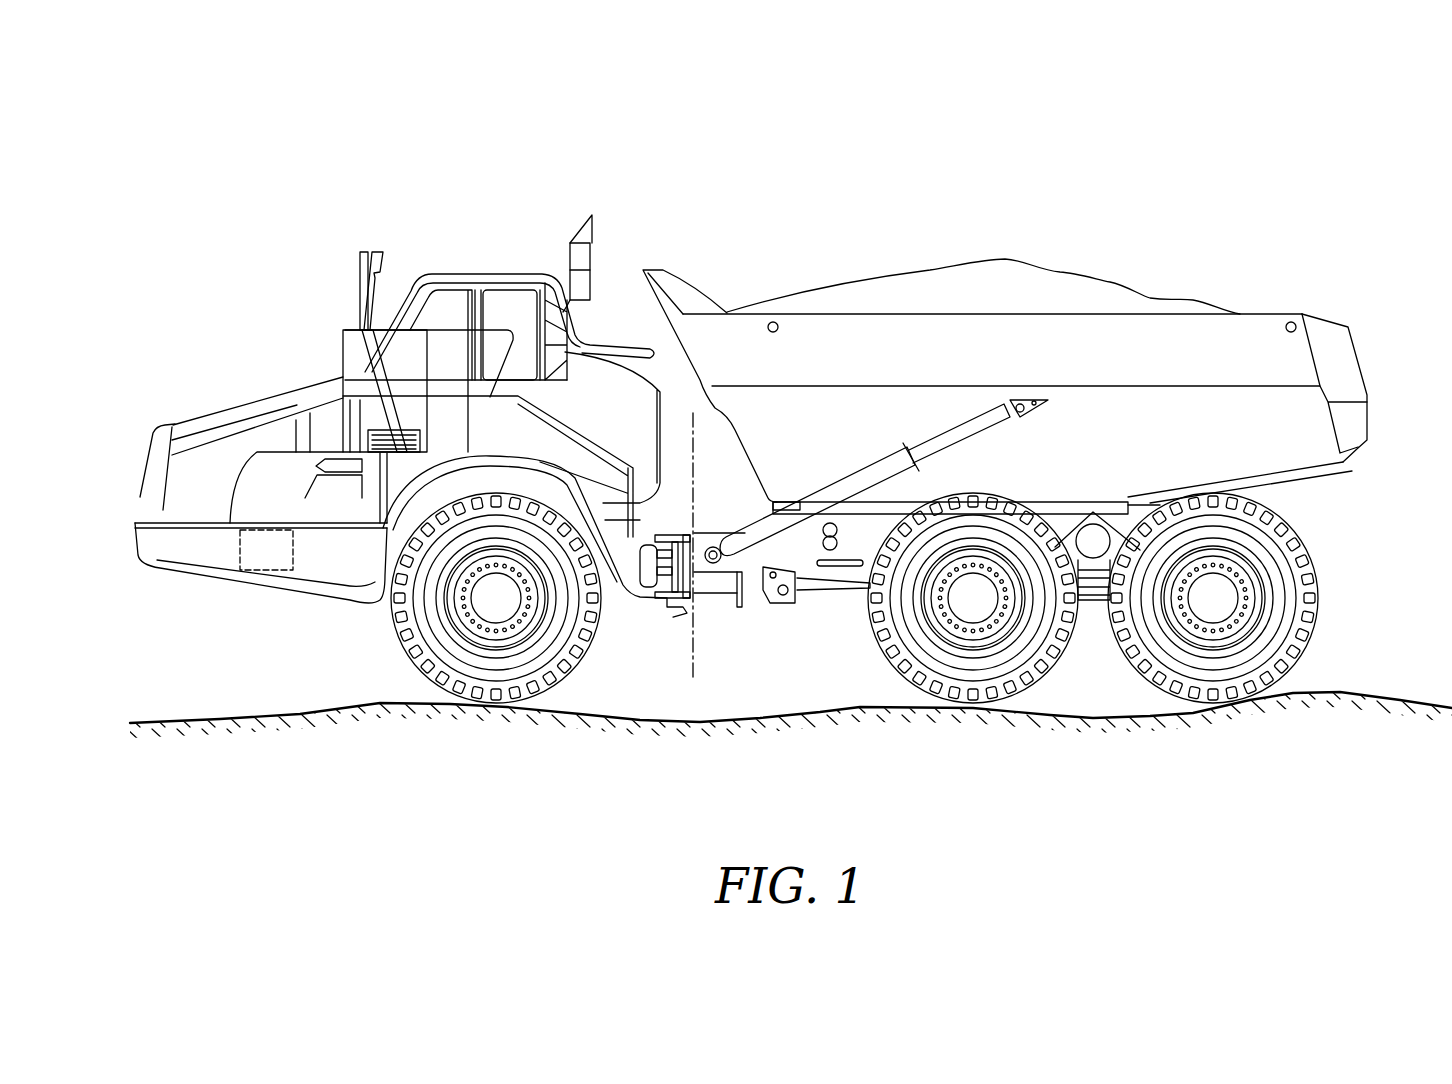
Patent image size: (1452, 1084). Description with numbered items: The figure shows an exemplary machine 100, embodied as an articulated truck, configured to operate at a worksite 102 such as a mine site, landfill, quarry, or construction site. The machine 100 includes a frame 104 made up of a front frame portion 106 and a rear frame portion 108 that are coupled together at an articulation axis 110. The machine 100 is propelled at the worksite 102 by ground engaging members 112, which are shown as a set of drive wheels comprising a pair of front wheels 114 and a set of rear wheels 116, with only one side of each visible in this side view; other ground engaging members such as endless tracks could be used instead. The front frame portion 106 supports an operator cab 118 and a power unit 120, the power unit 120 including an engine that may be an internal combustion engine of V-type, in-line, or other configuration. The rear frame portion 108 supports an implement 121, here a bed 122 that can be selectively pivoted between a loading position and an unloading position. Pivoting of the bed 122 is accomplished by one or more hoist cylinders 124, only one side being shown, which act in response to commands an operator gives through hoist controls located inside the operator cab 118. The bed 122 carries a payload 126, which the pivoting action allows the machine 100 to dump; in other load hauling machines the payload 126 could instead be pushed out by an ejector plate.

The machine 100 is at (1408, 112).
The worksite 102 is at (222, 714).
The frame 104 is at (685, 603).
The front frame portion 106 is at (125, 540).
The rear frame portion 108 is at (763, 594).
The articulation axis 110 is at (694, 650).
The ground engaging members 112 is at (378, 637).
The front wheels 114 is at (397, 646).
The rear wheels 116 is at (1127, 673).
The operator cab 118 is at (481, 266).
The power unit 120 is at (284, 565).
The implement 121 is at (1273, 306).
The bed 122 is at (1297, 355).
The hoist cylinders 124 is at (913, 462).
The payload 126 is at (1075, 287).